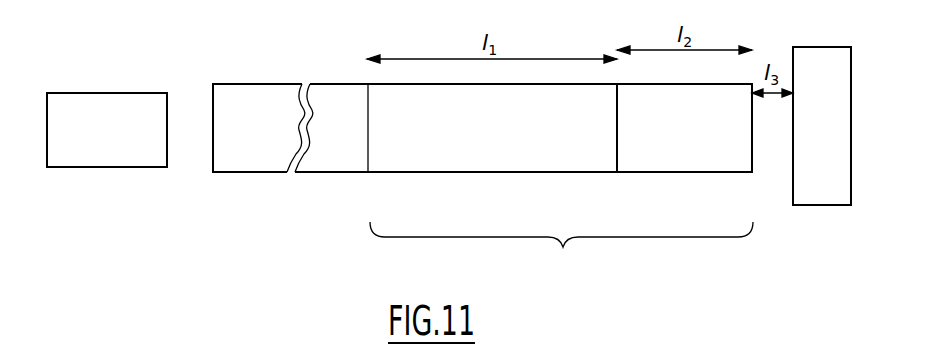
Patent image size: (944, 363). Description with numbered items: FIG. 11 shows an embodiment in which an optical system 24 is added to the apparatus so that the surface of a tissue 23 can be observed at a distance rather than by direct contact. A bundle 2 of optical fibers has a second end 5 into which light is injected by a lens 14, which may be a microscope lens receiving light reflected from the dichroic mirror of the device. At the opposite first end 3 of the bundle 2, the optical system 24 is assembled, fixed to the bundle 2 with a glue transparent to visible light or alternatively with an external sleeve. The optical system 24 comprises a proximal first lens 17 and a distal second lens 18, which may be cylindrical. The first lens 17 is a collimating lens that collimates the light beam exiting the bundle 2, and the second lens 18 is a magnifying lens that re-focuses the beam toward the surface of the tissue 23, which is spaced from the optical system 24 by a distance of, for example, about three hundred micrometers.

The lens 14 is at (123, 157).
The second end of the bundle 5 is at (476, 155).
The bundle of optical fibers 2 is at (317, 163).
The first end of the bundle 3 is at (367, 153).
The first lens 17 is at (490, 162).
The second lens 18 is at (665, 155).
The tissue 23 is at (805, 190).
The optical system 24 is at (561, 251).